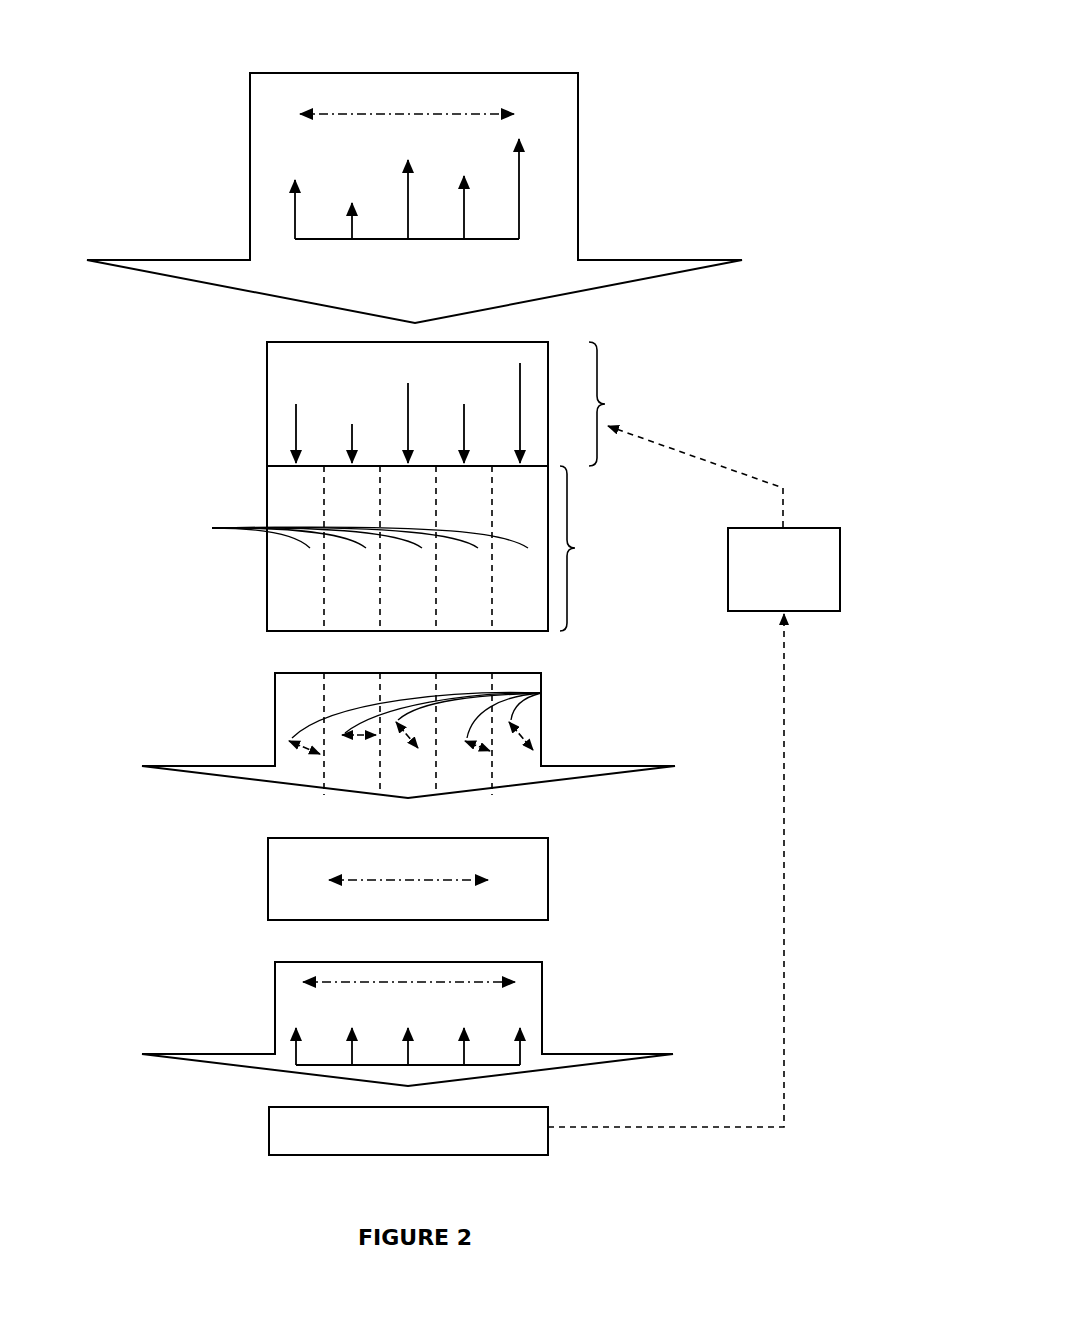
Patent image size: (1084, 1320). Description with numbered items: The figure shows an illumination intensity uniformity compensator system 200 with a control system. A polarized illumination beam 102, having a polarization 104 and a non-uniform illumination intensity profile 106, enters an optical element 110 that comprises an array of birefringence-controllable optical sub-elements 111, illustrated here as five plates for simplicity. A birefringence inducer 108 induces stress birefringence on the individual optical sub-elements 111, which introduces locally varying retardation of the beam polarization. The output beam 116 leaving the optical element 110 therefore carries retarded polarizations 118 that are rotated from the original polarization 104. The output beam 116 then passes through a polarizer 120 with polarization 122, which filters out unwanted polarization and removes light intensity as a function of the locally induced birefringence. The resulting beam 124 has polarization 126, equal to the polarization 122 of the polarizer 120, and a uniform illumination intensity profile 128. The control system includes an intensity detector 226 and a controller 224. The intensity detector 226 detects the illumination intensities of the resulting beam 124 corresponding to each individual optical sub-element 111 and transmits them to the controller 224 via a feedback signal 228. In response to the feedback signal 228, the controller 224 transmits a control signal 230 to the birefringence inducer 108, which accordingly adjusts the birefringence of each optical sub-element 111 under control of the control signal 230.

The polarized illumination beam 102 is at (578, 93).
The polarization 104 is at (320, 113).
The illumination intensity profile 106 is at (293, 213).
The birefringence inducer 108 is at (606, 383).
The optical element 110 is at (578, 528).
The optical sub-elements 111 is at (344, 524).
The output beam 116 is at (283, 713).
The retarded polarizations 118 is at (541, 693).
The polarizer 120 is at (548, 858).
The polarization 122 is at (435, 880).
The resulting beam 124 is at (283, 1000).
The polarization 126 is at (480, 982).
The uniform illumination intensity profile 128 is at (525, 1037).
The system 200 is at (908, 140).
The controller 224 is at (784, 569).
The intensity detector 226 is at (408, 1131).
The feedback signal 228 is at (673, 1130).
The control signal 230 is at (713, 462).